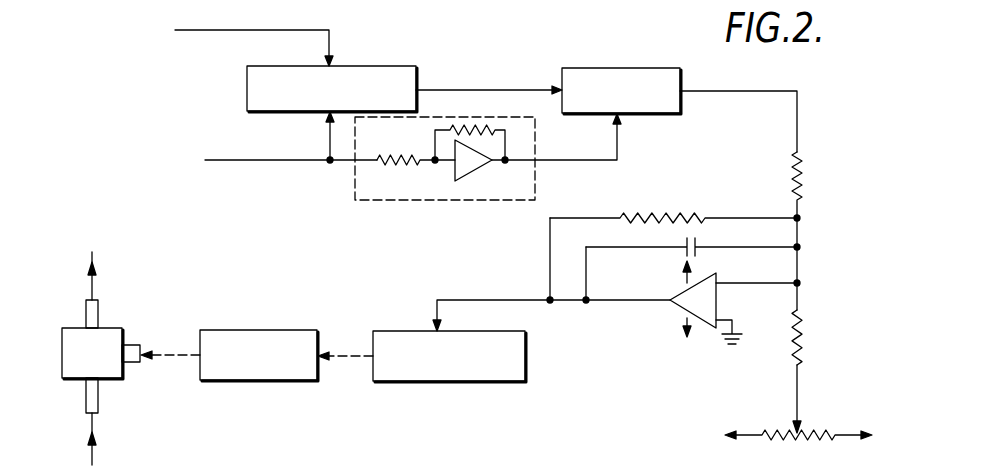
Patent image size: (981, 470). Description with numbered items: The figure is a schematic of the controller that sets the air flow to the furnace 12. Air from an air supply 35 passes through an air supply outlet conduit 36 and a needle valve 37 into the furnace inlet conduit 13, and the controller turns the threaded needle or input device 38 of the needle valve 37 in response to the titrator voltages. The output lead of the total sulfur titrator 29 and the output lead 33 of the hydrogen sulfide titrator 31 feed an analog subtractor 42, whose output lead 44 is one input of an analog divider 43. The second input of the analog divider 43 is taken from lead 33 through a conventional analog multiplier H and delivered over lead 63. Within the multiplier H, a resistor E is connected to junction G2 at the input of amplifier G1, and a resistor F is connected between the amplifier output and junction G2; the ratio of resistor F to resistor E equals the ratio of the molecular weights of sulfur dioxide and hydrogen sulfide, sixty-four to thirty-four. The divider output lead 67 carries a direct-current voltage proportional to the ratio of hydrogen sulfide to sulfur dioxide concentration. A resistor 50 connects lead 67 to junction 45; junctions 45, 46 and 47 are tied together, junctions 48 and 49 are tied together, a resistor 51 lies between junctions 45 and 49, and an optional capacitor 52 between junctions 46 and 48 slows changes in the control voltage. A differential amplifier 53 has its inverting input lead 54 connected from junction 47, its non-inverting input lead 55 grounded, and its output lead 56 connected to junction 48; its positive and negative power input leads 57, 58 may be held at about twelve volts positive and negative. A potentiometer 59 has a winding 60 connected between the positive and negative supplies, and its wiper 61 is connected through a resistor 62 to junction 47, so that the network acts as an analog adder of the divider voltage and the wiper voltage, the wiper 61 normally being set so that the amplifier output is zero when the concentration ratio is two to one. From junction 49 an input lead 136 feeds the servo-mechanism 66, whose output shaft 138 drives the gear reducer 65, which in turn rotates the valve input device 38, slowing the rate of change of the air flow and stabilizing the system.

The furnace 12 is at (100, 312).
The furnace inlet conduit 13 is at (85, 311).
The total sulfur titrator 29 is at (113, 38).
The hydrogen sulfide titrator 31 is at (132, 171).
The titrator output lead 33 is at (299, 30).
The air supply 35 is at (100, 396).
The air supply outlet conduit 36 is at (88, 400).
The needle valve 37 is at (147, 313).
The threaded needle or input device 38 is at (133, 360).
The analog subtractor 42 is at (364, 61).
The analog divider 43 is at (636, 59).
The output lead 44 is at (450, 90).
The junction 45 is at (800, 216).
The junction 46 is at (800, 246).
The junction 47 is at (800, 282).
The junction 48 is at (586, 303).
The junction 49 is at (550, 302).
The resistor 50 is at (795, 156).
The resistor 51 is at (667, 216).
The capacitor 52 is at (697, 245).
The differential amplifier 53 is at (702, 338).
The inverting input lead 54 is at (725, 283).
The non-inverting input lead 55 is at (735, 322).
The output lead 56 is at (617, 283).
The positive power input lead 57 is at (680, 283).
The negative power input lead 58 is at (682, 320).
The potentiometer 59 is at (803, 445).
The winding 60 is at (785, 428).
The wiper 61 is at (799, 392).
The resistor 62 is at (800, 330).
The divider input line 63 is at (507, 159).
The gear reducer 65 is at (278, 330).
The servo-mechanism 66 is at (508, 386).
The output lead 67 is at (727, 91).
The input lead 136 is at (435, 312).
The output shaft 138 is at (350, 356).
The resistor E is at (388, 157).
The resistor F is at (485, 127).
The amplifier G1 is at (476, 177).
The junction G2 is at (432, 166).
The analog multiplier H is at (404, 206).